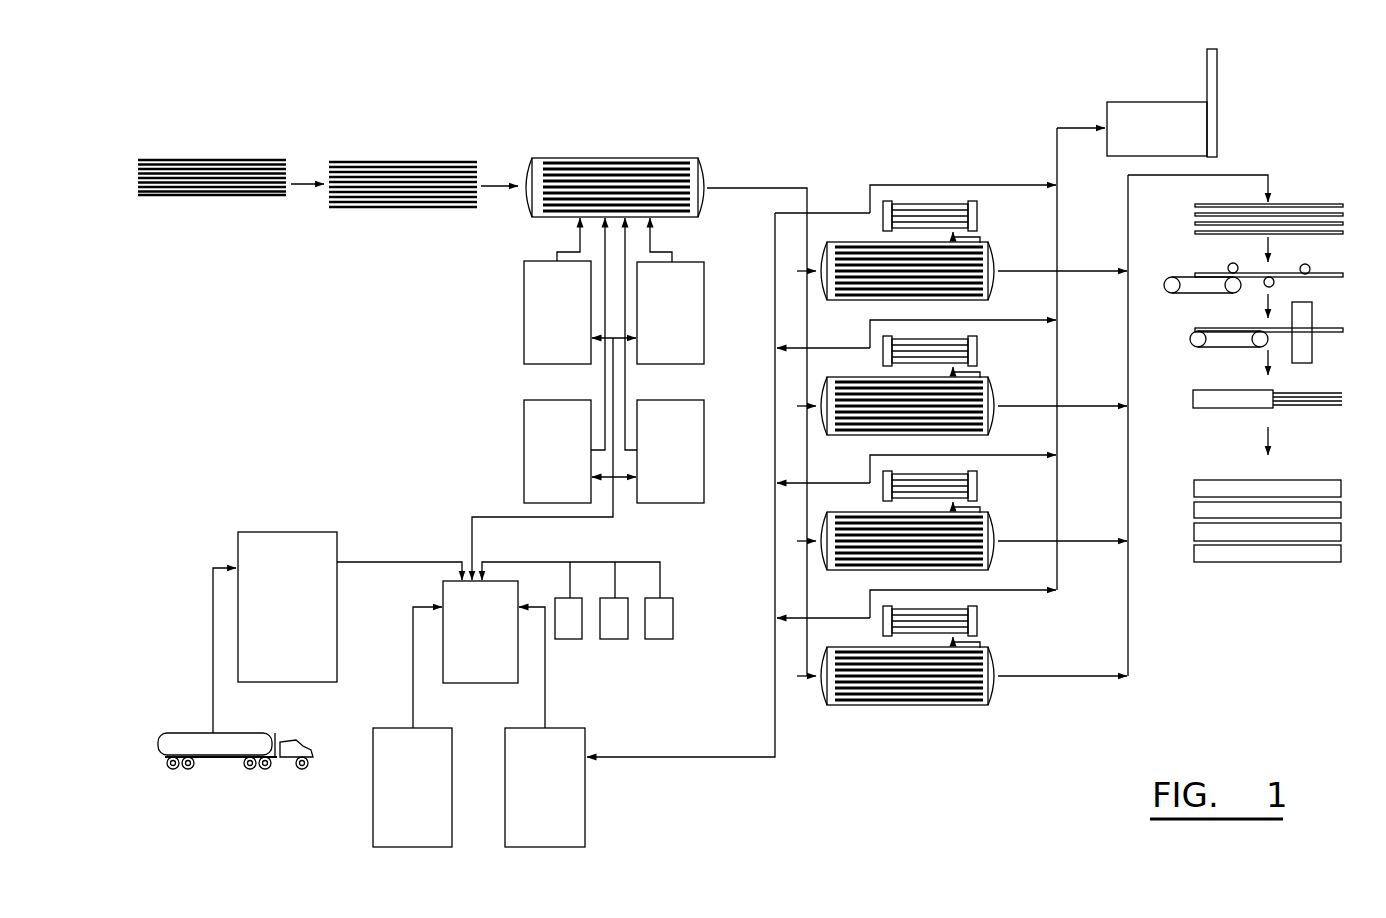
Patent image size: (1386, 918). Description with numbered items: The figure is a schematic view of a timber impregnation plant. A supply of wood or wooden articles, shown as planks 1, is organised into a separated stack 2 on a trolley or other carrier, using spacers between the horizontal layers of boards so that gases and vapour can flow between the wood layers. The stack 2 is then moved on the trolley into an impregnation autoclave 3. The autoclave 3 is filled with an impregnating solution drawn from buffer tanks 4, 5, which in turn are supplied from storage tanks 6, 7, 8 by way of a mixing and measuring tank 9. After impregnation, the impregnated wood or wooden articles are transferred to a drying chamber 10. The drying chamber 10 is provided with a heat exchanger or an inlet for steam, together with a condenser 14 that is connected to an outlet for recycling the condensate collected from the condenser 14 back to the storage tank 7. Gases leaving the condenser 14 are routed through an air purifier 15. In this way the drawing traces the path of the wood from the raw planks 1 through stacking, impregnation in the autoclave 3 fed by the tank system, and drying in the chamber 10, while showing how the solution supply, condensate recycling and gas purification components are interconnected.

The planks 1 is at (218, 170).
The separated stack 2 is at (388, 180).
The impregnation autoclave 3 is at (617, 158).
The buffer tank 4 is at (686, 313).
The buffer tank 5 is at (686, 459).
The storage tank 6 is at (283, 552).
The storage tank 7 is at (568, 815).
The storage tank 8 is at (658, 630).
The mixing and measuring tank 9 is at (478, 665).
The drying chamber 10 is at (853, 300).
The condenser 14 is at (973, 217).
The air purifier 15 is at (1162, 117).